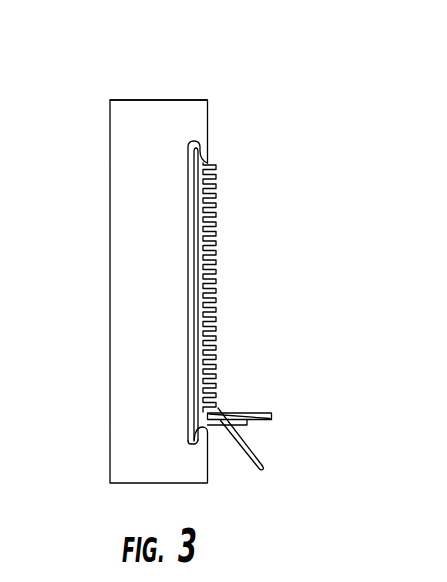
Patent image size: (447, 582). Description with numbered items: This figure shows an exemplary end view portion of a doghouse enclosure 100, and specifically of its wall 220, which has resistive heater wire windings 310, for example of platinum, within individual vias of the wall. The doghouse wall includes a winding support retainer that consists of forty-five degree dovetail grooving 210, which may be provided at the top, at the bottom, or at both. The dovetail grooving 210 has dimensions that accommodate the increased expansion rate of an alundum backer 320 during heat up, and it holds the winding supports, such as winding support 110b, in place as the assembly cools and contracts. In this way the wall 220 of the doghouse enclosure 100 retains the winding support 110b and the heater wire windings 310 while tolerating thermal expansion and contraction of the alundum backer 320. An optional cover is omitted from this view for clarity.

The doghouse enclosure 100 is at (158, 100).
The dovetail grooving 210 is at (185, 142).
The wall 220 is at (194, 121).
The alundum backer 320 is at (192, 170).
The winding support 110b is at (204, 165).
The resistive heater wire windings 310 is at (264, 456).